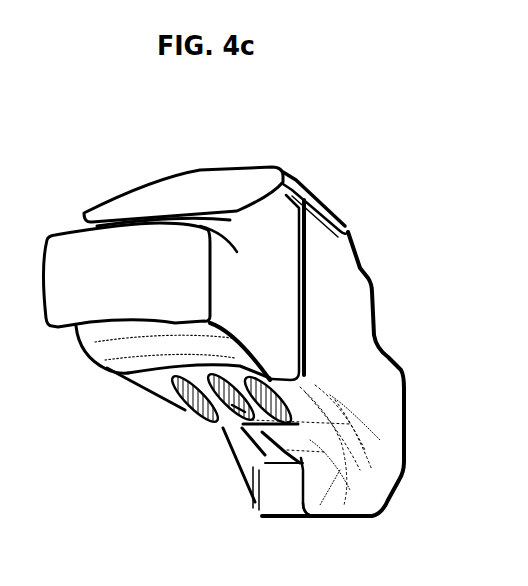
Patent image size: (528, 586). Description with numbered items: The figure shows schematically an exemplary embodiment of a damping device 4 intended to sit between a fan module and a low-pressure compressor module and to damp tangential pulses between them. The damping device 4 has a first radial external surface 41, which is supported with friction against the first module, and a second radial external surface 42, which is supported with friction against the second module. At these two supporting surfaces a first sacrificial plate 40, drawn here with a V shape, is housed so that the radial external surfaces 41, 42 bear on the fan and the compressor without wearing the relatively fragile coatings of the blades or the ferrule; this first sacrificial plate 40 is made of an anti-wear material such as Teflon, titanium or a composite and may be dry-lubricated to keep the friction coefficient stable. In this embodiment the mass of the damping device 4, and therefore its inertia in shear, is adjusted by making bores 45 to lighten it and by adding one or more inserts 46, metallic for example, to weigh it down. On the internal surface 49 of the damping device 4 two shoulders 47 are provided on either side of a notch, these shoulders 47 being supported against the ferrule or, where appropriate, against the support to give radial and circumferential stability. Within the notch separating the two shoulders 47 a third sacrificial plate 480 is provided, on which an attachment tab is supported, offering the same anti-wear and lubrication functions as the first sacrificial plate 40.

The damping device 4 is at (436, 252).
The first sacrificial plate 40 is at (218, 180).
The first radial external surface 41 is at (324, 192).
The second radial external surface 42 is at (159, 177).
The bores 45 is at (194, 406).
The inserts 46 is at (232, 405).
The shoulders 47 is at (258, 476).
The third sacrificial plate 480 is at (265, 444).
The internal surface 49 is at (139, 385).